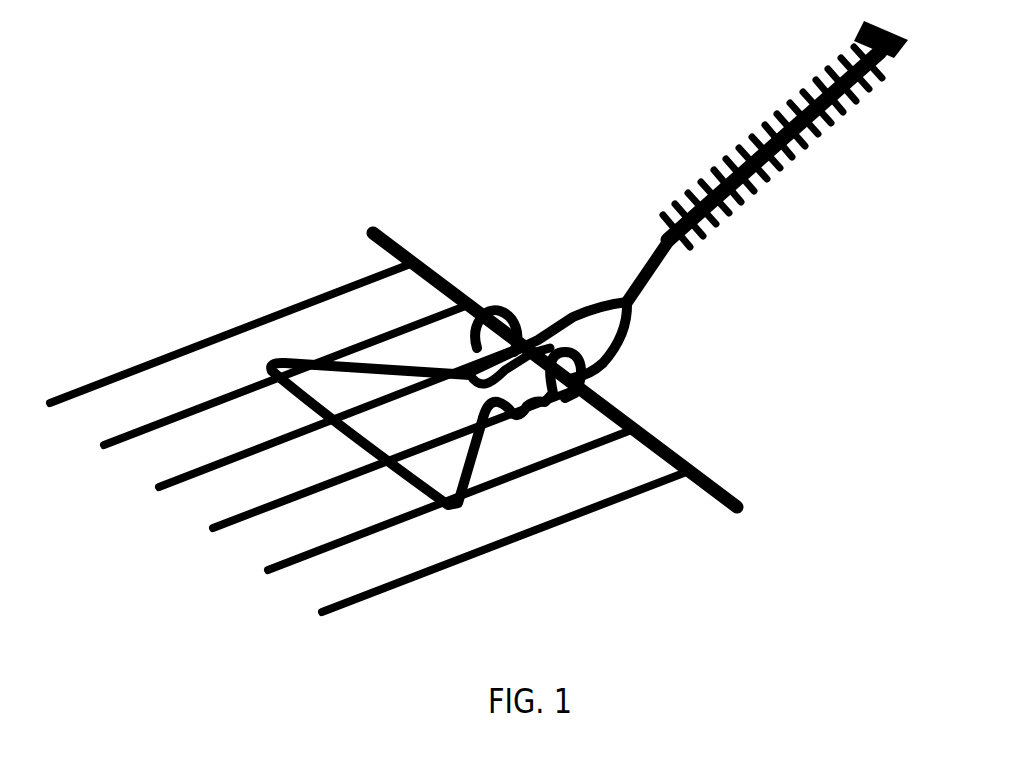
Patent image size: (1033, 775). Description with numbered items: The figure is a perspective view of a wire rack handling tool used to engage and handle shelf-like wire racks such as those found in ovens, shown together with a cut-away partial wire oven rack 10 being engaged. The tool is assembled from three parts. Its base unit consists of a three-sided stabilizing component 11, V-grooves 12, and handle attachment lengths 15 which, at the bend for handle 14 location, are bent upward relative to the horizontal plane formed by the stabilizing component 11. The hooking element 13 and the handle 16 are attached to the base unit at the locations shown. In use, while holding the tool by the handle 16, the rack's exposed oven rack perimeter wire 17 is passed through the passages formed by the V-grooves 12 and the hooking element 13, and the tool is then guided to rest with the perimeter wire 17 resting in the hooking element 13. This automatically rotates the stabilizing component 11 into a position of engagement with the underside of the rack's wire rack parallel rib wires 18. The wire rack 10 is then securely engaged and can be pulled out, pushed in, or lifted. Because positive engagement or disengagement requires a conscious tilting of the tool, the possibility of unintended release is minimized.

The wire oven rack 10 is at (20, 346).
The stabilizing component 11 is at (332, 443).
The V-grooves 12 is at (511, 390).
The hooking element 13 is at (545, 342).
The bend for handle 14 is at (613, 372).
The handle attachment lengths 15 is at (616, 269).
The handle 16 is at (828, 170).
The oven rack perimeter wire 17 is at (407, 229).
The wire rack parallel rib wires 18 is at (91, 453).